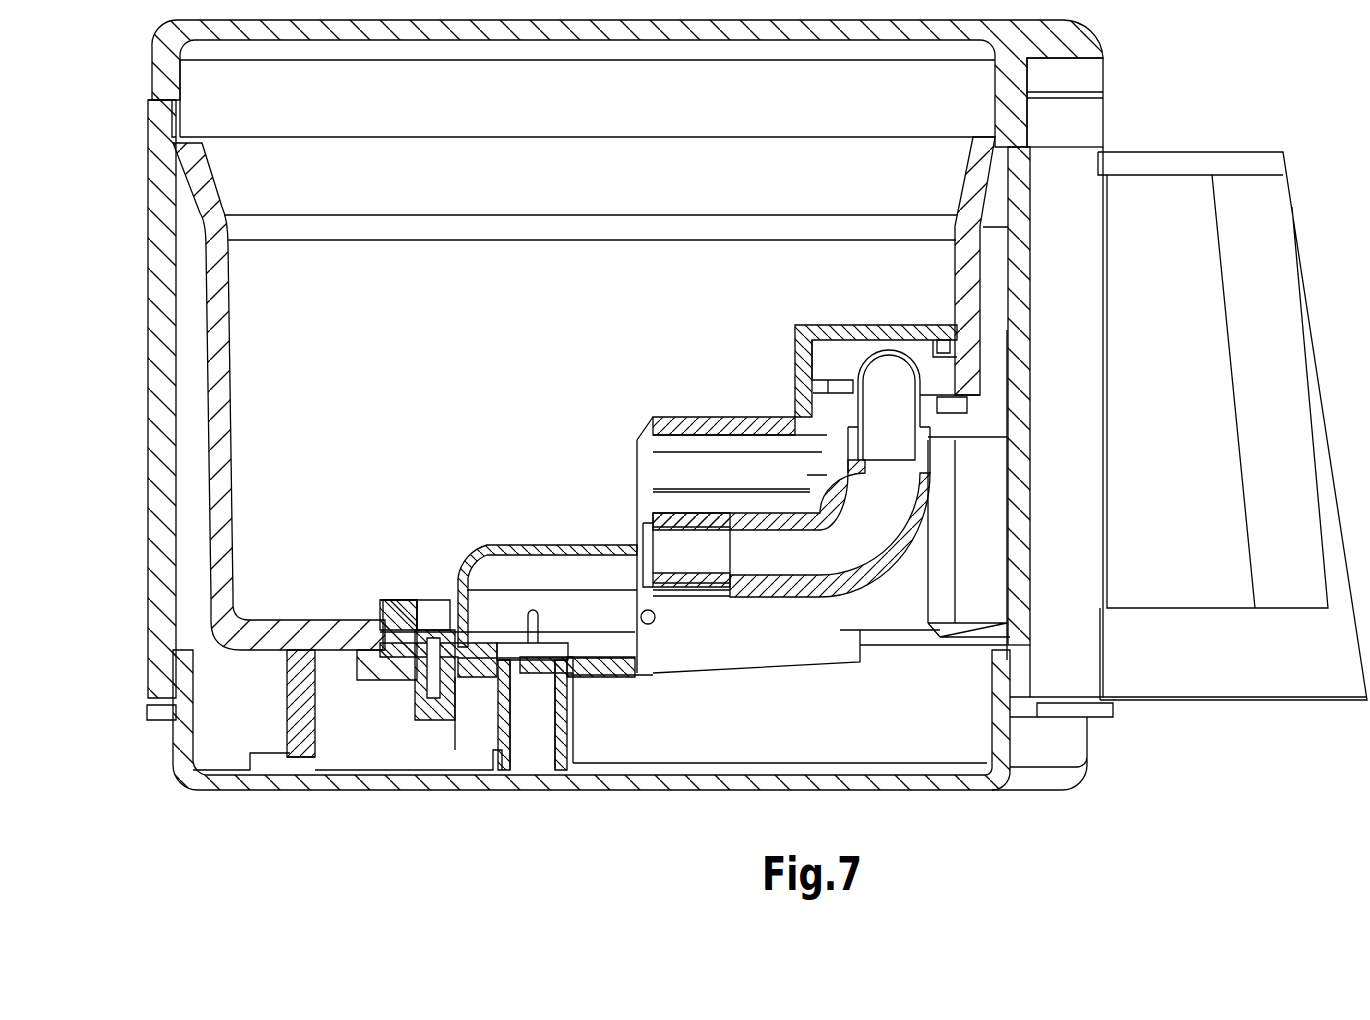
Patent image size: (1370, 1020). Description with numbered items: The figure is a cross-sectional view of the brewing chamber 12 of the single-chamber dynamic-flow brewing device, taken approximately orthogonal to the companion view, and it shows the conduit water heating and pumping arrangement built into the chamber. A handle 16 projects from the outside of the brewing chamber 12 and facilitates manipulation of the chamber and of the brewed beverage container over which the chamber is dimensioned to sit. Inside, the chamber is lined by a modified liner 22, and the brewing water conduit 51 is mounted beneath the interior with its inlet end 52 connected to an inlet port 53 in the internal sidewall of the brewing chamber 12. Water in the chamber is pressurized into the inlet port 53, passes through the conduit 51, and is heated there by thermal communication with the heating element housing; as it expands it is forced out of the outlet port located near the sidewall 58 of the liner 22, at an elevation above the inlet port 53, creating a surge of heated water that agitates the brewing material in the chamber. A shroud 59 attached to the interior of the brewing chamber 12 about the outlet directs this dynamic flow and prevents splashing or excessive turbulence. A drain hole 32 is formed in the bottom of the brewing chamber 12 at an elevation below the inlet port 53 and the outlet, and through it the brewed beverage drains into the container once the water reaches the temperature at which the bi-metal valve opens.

The brewing chamber 12 is at (152, 383).
The handle 16 is at (1170, 668).
The liner 22 is at (220, 475).
The drain hole 32 is at (541, 783).
The brewing water conduit 51 is at (767, 597).
The inlet end 52 is at (673, 594).
The inlet port 53 is at (633, 524).
The sidewall 58 is at (965, 292).
The shroud 59 is at (872, 328).